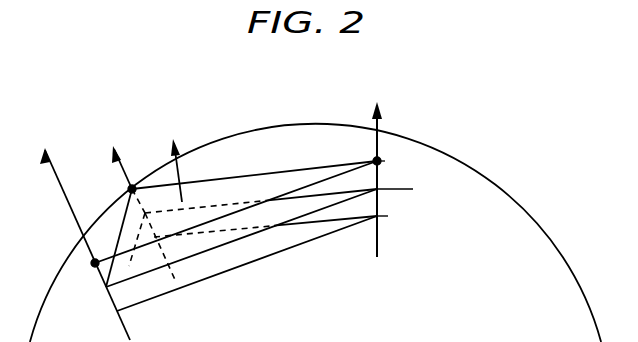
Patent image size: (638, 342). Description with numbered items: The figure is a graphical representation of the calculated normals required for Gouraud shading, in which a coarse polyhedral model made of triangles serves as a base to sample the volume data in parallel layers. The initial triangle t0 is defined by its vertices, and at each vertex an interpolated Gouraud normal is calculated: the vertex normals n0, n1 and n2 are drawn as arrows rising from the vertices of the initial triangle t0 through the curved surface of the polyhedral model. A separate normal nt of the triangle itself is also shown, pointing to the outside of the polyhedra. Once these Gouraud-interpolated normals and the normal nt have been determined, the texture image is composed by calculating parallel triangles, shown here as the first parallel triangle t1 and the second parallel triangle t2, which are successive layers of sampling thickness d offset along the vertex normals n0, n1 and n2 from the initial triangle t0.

The vertex normal n0 is at (76, 228).
The vertex normal n2 is at (114, 153).
The triangle normal nt is at (169, 155).
The vertex normal n1 is at (379, 163).
The initial triangle t0 is at (252, 204).
The parallel triangle t1 is at (271, 232).
The parallel triangle t2 is at (263, 258).